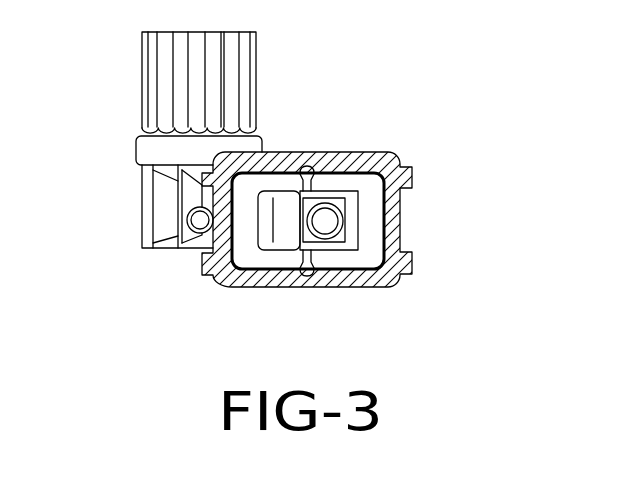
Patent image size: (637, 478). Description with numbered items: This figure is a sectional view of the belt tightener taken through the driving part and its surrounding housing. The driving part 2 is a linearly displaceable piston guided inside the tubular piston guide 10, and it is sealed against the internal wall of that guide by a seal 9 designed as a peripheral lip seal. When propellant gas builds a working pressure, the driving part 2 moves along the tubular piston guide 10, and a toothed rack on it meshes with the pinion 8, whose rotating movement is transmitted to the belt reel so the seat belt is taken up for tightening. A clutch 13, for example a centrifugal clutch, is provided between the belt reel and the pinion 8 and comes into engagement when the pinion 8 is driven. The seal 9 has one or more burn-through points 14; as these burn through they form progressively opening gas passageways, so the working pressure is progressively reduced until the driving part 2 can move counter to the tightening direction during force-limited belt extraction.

The driving part 2 is at (265, 234).
The pinion 8 is at (168, 220).
The seal 9 is at (360, 186).
The tubular piston guide 10 is at (395, 246).
The clutch 13 is at (153, 157).
The burn-through points 14 is at (308, 172).